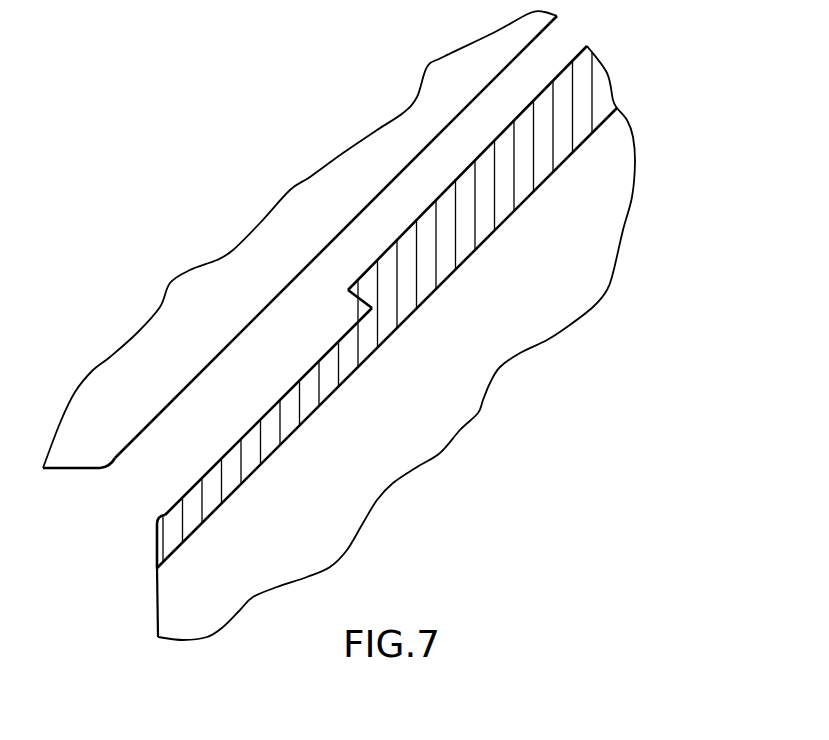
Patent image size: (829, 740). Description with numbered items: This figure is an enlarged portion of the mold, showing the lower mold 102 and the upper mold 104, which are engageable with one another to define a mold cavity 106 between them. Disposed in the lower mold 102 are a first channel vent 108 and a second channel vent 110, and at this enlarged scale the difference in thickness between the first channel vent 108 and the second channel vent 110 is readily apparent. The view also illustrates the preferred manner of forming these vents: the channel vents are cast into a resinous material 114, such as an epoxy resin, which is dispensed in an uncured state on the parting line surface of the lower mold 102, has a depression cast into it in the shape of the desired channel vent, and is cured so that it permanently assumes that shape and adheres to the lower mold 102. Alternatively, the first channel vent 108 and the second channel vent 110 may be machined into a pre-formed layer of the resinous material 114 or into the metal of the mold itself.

The lower mold 102 is at (418, 421).
The upper mold 104 is at (300, 239).
The mold cavity 106 is at (82, 547).
The first channel vent 108 is at (230, 418).
The second channel vent 110 is at (427, 160).
The resinous material 114 is at (387, 307).